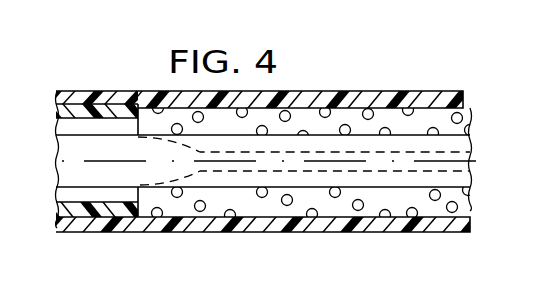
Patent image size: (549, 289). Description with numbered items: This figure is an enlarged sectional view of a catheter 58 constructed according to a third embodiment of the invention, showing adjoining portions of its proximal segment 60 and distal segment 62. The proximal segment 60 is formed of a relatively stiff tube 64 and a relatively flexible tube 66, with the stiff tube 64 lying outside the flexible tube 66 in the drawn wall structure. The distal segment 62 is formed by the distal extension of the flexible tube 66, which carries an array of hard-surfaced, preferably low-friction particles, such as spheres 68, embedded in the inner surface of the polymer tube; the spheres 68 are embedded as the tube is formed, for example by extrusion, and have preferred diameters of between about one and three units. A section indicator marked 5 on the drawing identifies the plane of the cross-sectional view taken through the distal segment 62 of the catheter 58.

The catheter 58 is at (152, 87).
The proximal segment 60 is at (81, 87).
The distal segment 62 is at (313, 89).
The relatively stiff tube 64 is at (108, 208).
The relatively flexible tube 66 is at (254, 221).
The spheres 68 is at (463, 118).
The section line for FIG. 5 is at (401, 57).